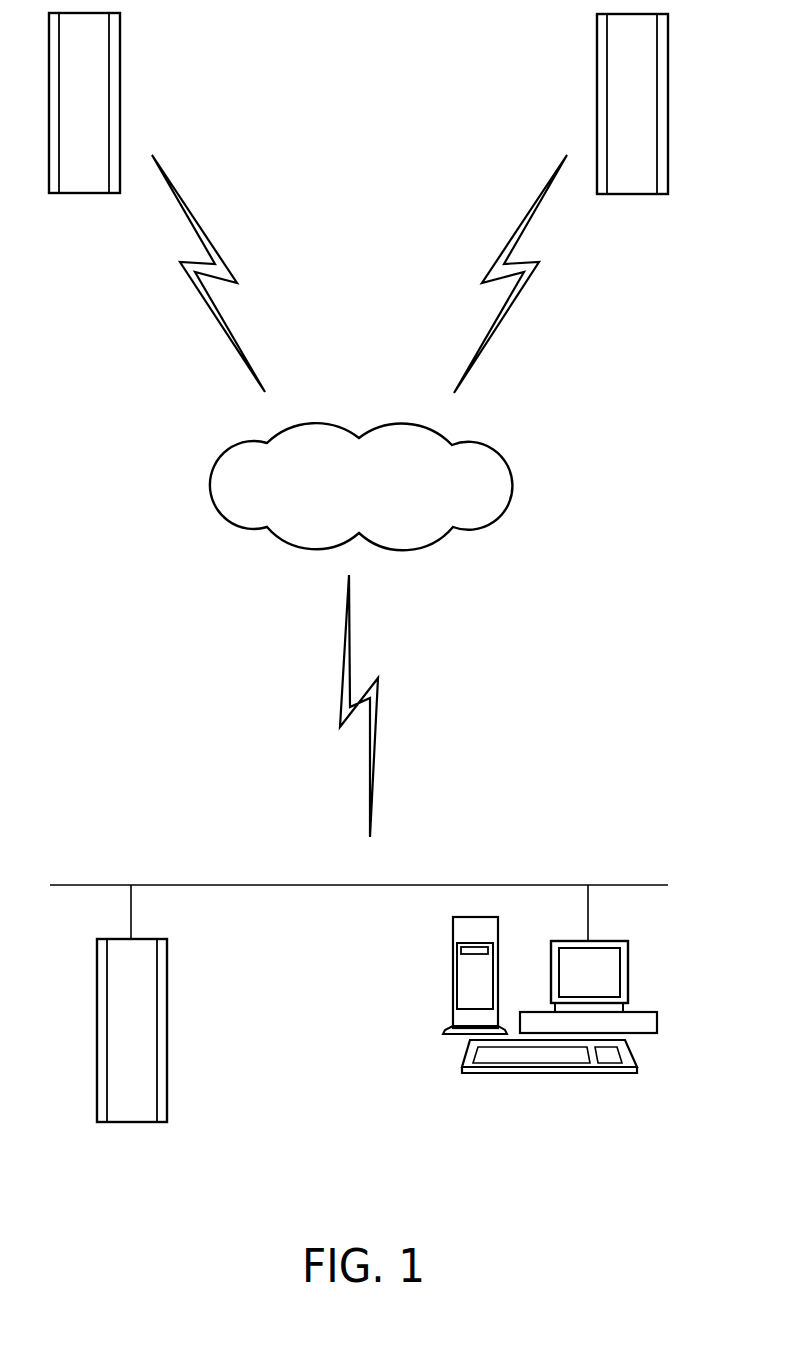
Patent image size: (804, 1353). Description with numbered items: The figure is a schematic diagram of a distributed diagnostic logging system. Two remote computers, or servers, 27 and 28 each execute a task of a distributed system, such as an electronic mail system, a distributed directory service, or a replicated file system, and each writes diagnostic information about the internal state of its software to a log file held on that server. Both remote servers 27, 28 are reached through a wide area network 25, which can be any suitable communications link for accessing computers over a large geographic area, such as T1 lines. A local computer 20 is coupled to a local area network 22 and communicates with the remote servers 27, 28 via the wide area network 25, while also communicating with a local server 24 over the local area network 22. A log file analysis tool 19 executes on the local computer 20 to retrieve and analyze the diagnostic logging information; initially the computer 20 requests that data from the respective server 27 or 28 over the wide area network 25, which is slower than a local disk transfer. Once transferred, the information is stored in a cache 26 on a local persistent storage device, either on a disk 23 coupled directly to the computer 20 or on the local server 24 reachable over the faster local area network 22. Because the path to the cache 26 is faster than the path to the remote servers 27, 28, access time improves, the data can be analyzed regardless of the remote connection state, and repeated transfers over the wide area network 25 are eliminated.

The log file analysis tool 19 is at (612, 957).
The local computer 20 is at (537, 987).
The local area network 22 is at (636, 884).
The disk 23 is at (437, 967).
The local server 24 is at (168, 1031).
The wide area network 25 is at (443, 469).
The cache 26 is at (457, 977).
The remote computer 27 is at (121, 101).
The remote computer 28 is at (669, 105).